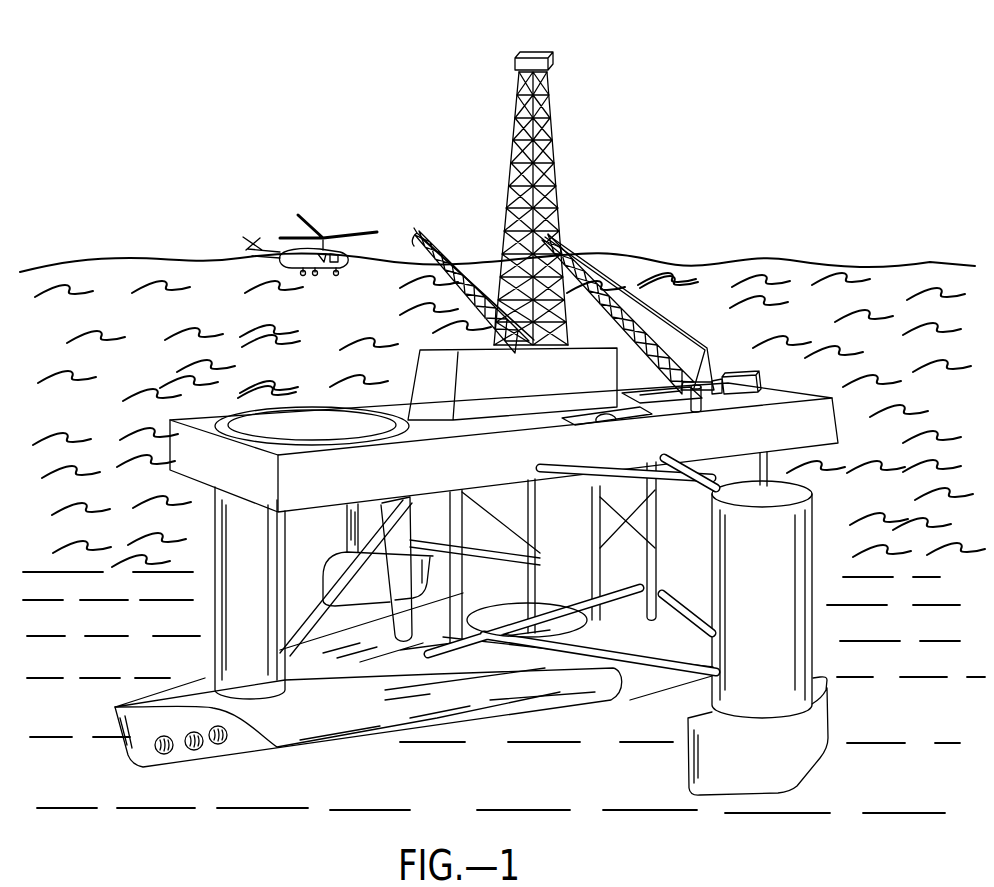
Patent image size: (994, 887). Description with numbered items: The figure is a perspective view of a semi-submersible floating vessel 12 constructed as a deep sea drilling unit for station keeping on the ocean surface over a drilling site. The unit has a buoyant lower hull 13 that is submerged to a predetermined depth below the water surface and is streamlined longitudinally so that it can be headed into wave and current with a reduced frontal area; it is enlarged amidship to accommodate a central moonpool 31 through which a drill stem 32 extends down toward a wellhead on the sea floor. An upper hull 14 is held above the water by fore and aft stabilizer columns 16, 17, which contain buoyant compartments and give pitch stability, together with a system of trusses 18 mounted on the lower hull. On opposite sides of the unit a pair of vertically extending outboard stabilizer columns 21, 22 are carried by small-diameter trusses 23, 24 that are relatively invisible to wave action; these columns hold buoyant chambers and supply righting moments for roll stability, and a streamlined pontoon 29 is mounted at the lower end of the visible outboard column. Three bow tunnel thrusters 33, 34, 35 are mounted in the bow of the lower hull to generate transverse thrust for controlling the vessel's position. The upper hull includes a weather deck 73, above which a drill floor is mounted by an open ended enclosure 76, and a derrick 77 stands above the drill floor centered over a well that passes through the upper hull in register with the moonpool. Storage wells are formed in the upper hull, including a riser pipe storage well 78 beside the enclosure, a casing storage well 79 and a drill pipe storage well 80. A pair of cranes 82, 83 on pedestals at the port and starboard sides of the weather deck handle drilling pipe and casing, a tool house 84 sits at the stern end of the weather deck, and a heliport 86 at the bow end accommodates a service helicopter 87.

The semi-submersible floating vessel 12 is at (652, 222).
The lower hull 13 is at (372, 740).
The upper hull 14 is at (504, 437).
The fore stabilizer column 16 is at (215, 530).
The aft stabilizer column 17 is at (772, 464).
The truss 18 is at (302, 618).
The outboard stabilizer column 21 is at (346, 526).
The outboard stabilizer column 22 is at (805, 632).
The truss 23 is at (636, 555).
The truss 24 is at (536, 540).
The pontoon 29 is at (822, 720).
The moonpool 31 is at (572, 626).
The drill stem 32 is at (515, 543).
The bow tunnel thruster 33 is at (167, 755).
The bow tunnel thruster 34 is at (196, 751).
The bow tunnel thruster 35 is at (223, 745).
The weather deck 73 is at (476, 430).
The open ended enclosure 76 is at (606, 348).
The derrick 77 is at (540, 130).
The riser pipe storage well 78 is at (610, 421).
The casing storage well 79 is at (650, 397).
The drill pipe storage well 80 is at (673, 404).
The crane 82 is at (436, 243).
The crane 83 is at (570, 250).
The tool house 84 is at (740, 375).
The heliport 86 is at (295, 428).
The service helicopter 87 is at (325, 238).